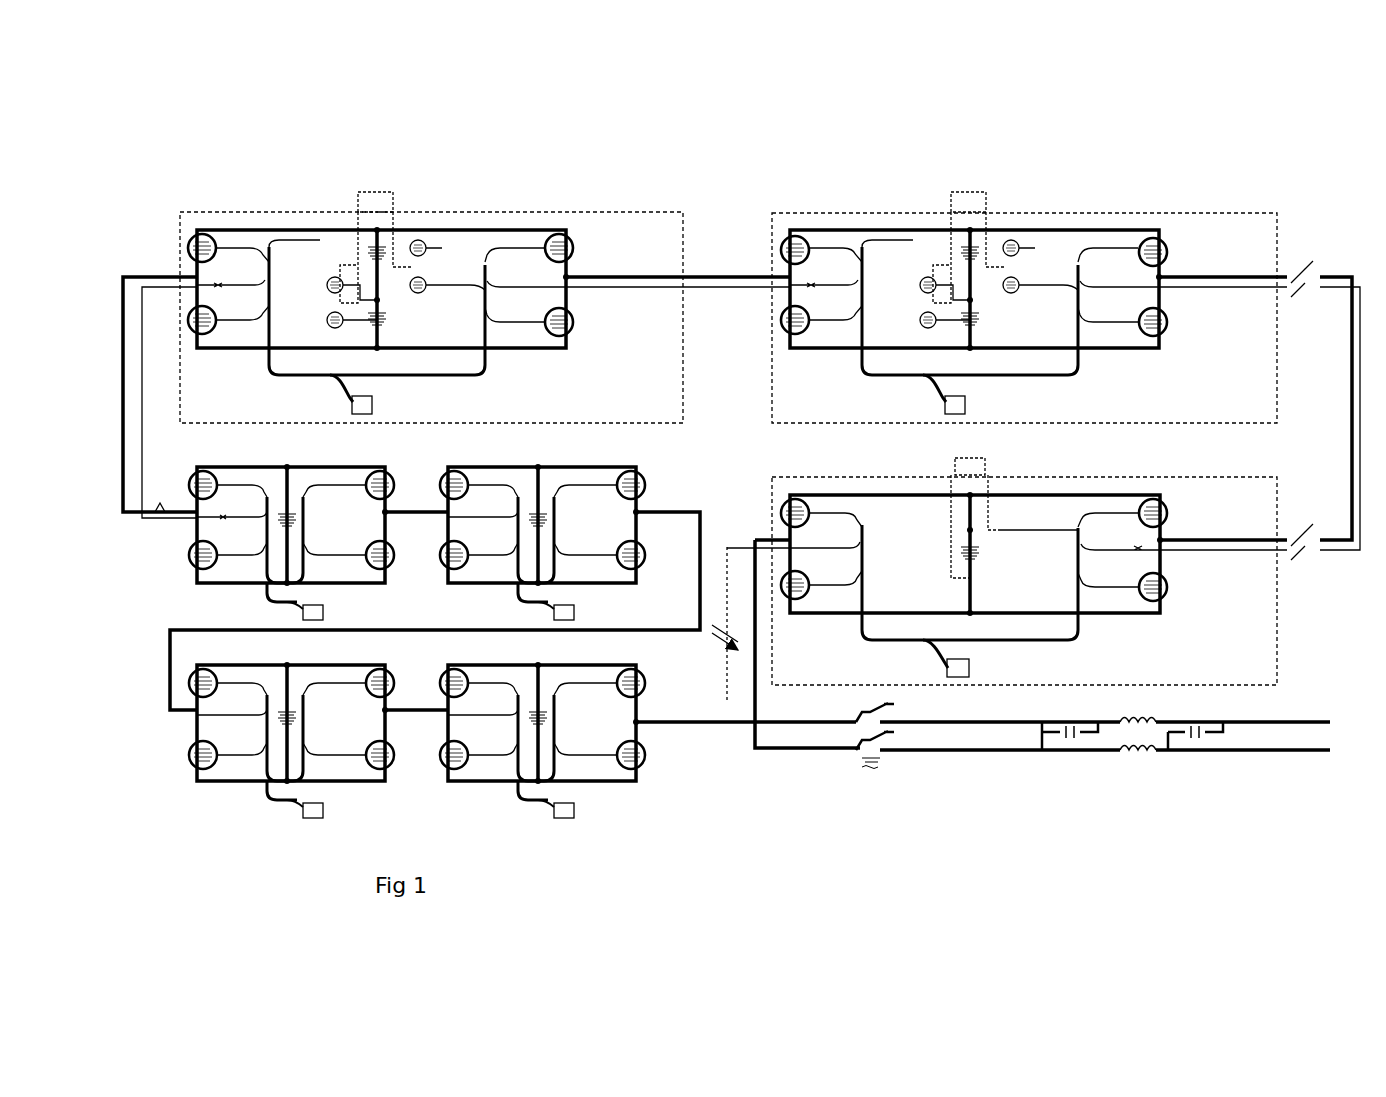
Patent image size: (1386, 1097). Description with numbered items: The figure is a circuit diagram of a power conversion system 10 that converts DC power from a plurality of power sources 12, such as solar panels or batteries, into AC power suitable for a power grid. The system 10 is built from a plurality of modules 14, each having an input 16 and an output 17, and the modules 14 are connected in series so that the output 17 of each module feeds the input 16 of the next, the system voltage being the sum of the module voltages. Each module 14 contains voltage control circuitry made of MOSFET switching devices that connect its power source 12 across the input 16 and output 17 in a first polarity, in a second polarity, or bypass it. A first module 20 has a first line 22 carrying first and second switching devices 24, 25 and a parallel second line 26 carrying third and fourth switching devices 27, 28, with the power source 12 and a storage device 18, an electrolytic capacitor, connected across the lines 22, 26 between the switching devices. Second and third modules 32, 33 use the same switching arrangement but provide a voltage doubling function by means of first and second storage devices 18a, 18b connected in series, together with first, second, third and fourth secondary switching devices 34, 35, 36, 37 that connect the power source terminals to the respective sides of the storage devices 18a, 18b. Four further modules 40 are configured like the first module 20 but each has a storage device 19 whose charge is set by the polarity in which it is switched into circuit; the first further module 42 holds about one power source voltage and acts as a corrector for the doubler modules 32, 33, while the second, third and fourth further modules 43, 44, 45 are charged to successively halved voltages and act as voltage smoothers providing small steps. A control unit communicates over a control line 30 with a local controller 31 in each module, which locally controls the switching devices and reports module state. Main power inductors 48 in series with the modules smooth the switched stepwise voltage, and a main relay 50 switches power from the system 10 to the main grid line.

The power conversion system 10 is at (876, 858).
The power source 12 is at (374, 190).
The module 14 is at (728, 262).
The input 16 is at (690, 290).
The output 17 is at (172, 292).
The storage device 18 is at (990, 556).
The first storage device 18a is at (391, 243).
The second storage device 18b is at (384, 319).
The storage device 19 is at (298, 523).
The first module 20 is at (1140, 473).
The first line 22 is at (297, 228).
The first switching device 24 is at (200, 236).
The second switching device 25 is at (1170, 250).
The second line 26 is at (507, 365).
The third switching device 27 is at (212, 335).
The fourth switching device 28 is at (574, 336).
The control line 30 is at (153, 276).
The local controller 31 is at (374, 404).
The second module 32 is at (1070, 193).
The third module 33 is at (563, 205).
The first secondary switching device 34 is at (433, 242).
The second secondary switching device 35 is at (443, 282).
The third secondary switching device 36 is at (335, 275).
The fourth secondary switching device 37 is at (330, 330).
The further module 40 is at (290, 860).
The first further module 42 is at (310, 460).
The second further module 43 is at (552, 462).
The third further module 44 is at (232, 797).
The fourth further module 45 is at (655, 785).
The main power inductor 48 is at (1138, 765).
The main relay 50 is at (880, 770).